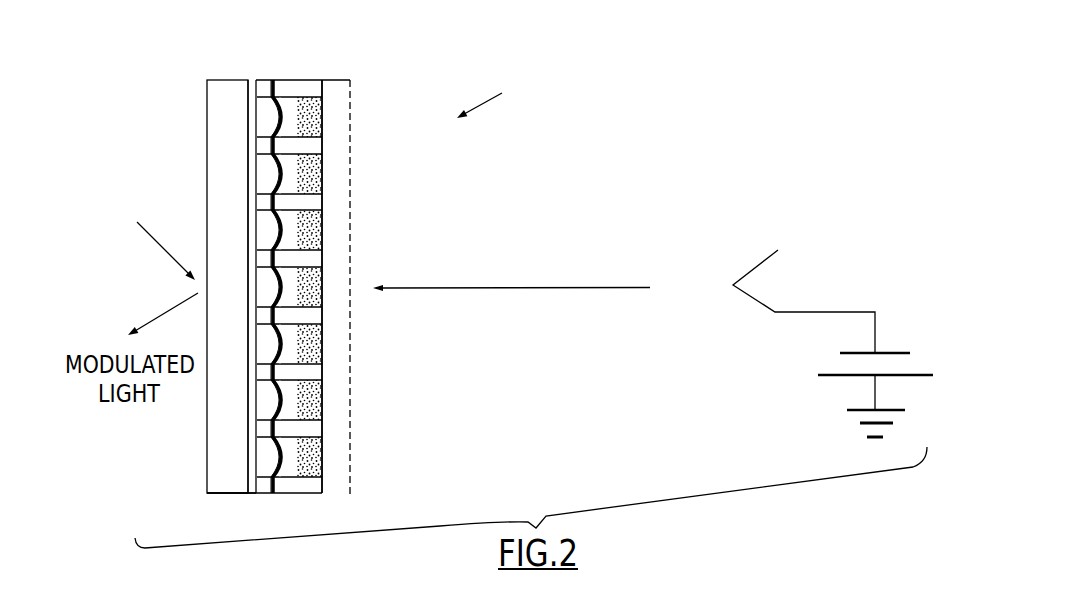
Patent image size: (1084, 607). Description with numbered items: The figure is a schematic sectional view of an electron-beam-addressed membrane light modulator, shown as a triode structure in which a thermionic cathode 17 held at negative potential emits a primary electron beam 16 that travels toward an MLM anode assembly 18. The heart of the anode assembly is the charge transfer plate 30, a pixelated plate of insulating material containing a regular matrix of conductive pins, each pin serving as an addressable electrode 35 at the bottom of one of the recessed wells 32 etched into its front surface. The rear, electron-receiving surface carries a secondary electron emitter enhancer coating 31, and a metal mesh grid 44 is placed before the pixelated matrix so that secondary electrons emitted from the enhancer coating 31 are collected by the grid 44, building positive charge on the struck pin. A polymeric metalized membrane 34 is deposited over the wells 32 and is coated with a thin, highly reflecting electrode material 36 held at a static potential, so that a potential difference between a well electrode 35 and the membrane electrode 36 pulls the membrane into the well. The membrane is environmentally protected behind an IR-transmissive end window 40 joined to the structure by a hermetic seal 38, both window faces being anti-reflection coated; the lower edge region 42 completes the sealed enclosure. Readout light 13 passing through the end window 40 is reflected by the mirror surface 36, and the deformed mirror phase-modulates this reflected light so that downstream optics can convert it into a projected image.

The readout light 13 is at (130, 224).
The electron beam 16 is at (511, 256).
The thermionic cathode 17 is at (828, 331).
The MLM anode assembly 18 is at (496, 94).
The charge transfer plate 30 is at (295, 80).
The enhancer coating 31 is at (323, 478).
The wells 32 is at (290, 470).
The membrane 34 is at (290, 118).
The well electrode 35 is at (320, 393).
The membrane electrode 36 is at (263, 122).
The hermetic seal 38 is at (260, 80).
The end window 40 is at (227, 78).
The bottom edge 42 is at (248, 497).
The grid 44 is at (353, 412).